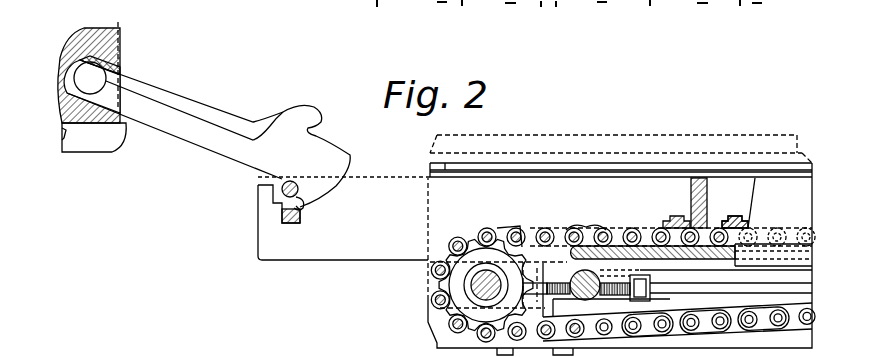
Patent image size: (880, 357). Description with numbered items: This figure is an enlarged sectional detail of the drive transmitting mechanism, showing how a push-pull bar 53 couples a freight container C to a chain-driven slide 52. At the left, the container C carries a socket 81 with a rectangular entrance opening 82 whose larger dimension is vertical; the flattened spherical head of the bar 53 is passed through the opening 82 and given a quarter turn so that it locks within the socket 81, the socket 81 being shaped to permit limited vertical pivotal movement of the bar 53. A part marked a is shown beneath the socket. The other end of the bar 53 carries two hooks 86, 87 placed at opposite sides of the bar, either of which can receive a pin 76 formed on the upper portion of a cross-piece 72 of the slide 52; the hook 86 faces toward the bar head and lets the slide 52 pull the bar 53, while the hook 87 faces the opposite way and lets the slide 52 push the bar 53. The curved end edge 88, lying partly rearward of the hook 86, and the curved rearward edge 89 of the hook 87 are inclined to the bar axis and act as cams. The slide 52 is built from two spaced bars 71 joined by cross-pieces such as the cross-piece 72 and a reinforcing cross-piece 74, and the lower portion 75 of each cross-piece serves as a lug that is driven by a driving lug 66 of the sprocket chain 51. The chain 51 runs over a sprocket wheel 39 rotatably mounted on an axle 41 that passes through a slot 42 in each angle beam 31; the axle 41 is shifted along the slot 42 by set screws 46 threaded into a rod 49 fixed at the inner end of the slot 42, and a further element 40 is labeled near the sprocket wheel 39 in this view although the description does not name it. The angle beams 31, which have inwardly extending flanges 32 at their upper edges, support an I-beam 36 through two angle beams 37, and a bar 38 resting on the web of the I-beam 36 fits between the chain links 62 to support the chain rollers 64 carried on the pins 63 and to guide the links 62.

The socket 81 is at (98, 55).
The rectangular entrance opening 82 is at (114, 72).
The freight container C is at (120, 42).
The bracket a is at (86, 148).
The push-pull bar 53 is at (183, 108).
The rearward edge of the hook 89 is at (284, 114).
The hook 87 is at (318, 109).
The end edge 88 is at (337, 190).
The pin 76 is at (282, 186).
The cross-piece 72 is at (274, 199).
The lower portion of cross-piece 75 is at (290, 224).
The hook 86 is at (306, 206).
The bar 71 is at (339, 258).
The slide 52 is at (392, 177).
The flange 32 is at (475, 174).
The sprocket chain 51 is at (530, 229).
The sprocket wheel 39 is at (438, 287).
The bolt or axle 41 is at (482, 264).
The bracket 40 is at (446, 322).
The slot 42 is at (446, 314).
The pin 63 is at (510, 231).
The chain link 62 is at (586, 218).
The bar or strap 38 is at (617, 245).
The chain roller 64 is at (627, 232).
The driving lug 66 is at (674, 220).
The cross-piece 74 is at (708, 188).
The pin or rod 49 is at (596, 291).
The set screw 46 is at (625, 295).
The I-beam 36 is at (672, 285).
The angle beam 37 is at (718, 294).
The angle beam 31 is at (776, 350).